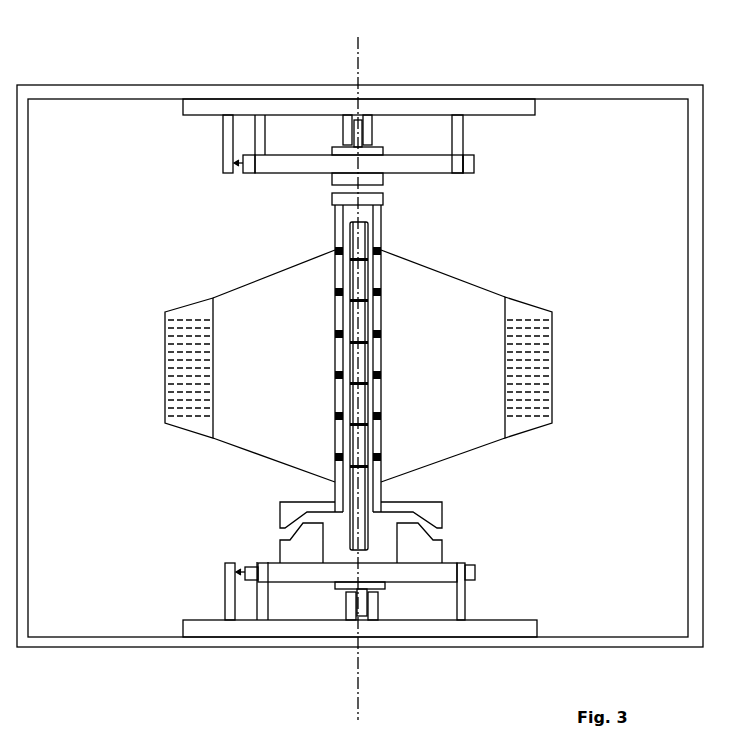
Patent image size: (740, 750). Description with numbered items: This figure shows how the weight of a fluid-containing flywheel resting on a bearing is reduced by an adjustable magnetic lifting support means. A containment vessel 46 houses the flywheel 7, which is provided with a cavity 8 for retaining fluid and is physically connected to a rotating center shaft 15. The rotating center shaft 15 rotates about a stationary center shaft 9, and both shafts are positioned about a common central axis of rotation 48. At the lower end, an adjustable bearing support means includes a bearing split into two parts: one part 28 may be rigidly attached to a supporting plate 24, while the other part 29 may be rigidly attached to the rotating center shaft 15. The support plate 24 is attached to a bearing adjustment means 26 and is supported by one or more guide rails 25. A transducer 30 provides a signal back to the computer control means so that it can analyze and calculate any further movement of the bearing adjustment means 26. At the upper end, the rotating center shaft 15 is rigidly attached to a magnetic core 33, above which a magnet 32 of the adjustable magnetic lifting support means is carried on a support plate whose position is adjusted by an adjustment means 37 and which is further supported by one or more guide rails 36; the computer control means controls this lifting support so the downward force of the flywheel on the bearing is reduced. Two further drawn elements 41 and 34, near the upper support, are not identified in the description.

The containment vessel 46 is at (617, 85).
The central axis of rotation 48 is at (363, 692).
The upper adjusting screw 41 is at (223, 150).
The upper support bar 34 is at (473, 173).
The guide rails 36 is at (463, 138).
The adjustment means 37 is at (372, 133).
The magnet 32 is at (332, 177).
The magnetic core 33 is at (385, 197).
The rotating center shaft 15 is at (383, 400).
The stationary center shaft 9 is at (350, 362).
The flywheel 7 is at (468, 278).
The cavity 8 is at (535, 340).
The bearing part 29 is at (442, 513).
The bearing part 28 is at (443, 555).
The transducer 30 is at (225, 582).
The guide rails 25 is at (467, 608).
The support plate 24 is at (477, 568).
The bearing adjustment means 26 is at (373, 613).